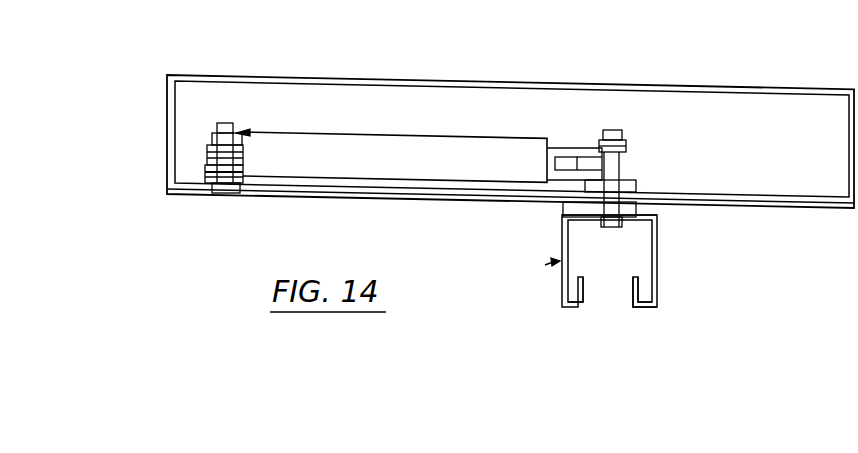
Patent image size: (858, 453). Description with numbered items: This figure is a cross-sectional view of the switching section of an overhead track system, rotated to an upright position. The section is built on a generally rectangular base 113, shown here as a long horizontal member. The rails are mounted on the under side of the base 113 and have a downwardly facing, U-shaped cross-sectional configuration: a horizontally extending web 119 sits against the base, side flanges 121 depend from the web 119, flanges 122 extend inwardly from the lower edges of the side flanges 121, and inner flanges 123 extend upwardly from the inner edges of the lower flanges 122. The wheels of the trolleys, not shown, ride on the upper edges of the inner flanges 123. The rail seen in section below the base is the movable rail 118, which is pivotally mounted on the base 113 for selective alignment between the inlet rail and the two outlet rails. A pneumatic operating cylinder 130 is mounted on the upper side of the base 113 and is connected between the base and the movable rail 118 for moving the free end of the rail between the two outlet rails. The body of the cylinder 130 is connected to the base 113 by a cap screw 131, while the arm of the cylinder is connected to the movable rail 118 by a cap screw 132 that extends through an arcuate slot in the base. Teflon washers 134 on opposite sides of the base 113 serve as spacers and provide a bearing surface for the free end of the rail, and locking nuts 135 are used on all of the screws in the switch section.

The base 113 is at (780, 207).
The movable rail 118 is at (547, 264).
The web 119 is at (647, 213).
The side flanges 121 is at (655, 257).
The flanges 122 is at (643, 307).
The inner flanges 123 is at (637, 290).
The pneumatic operating cylinder 130 is at (390, 150).
The cap screw 131 is at (224, 195).
The cap screw 132 is at (610, 128).
The Teflon washers 134 is at (637, 180).
The locking nuts 135 is at (628, 143).